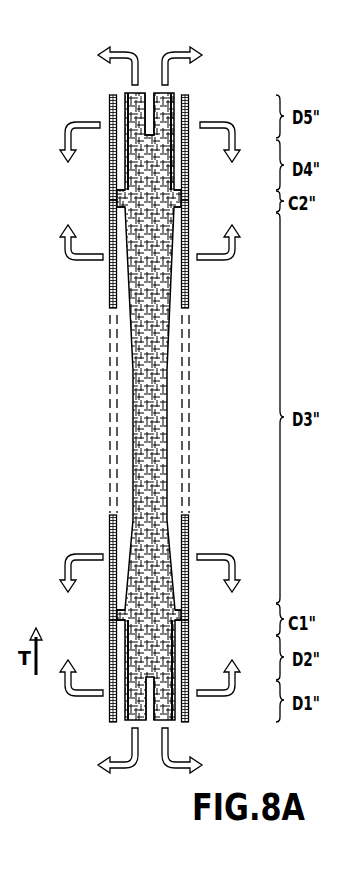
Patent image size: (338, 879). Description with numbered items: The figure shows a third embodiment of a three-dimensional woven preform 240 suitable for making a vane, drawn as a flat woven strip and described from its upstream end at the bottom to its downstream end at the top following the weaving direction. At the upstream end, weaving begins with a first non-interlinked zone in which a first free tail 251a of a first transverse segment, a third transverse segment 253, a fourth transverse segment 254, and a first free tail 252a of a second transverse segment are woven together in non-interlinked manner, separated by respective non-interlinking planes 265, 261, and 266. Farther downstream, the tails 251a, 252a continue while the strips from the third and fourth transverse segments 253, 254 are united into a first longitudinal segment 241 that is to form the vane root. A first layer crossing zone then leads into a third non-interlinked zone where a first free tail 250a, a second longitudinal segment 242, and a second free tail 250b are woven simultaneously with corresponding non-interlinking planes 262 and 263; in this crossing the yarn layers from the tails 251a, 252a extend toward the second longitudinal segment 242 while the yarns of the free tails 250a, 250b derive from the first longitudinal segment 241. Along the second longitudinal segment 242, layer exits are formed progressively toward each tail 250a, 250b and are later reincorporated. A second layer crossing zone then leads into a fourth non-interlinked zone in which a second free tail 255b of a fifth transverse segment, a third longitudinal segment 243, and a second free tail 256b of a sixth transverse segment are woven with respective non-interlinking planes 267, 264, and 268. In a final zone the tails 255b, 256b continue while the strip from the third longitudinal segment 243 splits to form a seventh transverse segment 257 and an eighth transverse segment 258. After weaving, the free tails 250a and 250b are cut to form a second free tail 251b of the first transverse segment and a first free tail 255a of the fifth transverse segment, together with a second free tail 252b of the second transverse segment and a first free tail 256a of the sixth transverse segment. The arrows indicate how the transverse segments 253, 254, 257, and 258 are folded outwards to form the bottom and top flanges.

The 3D woven preform 240 is at (182, 409).
The first longitudinal segment 241 is at (152, 650).
The second longitudinal segment 242 is at (140, 382).
The third longitudinal segment 243 is at (121, 191).
The first free tail 250a is at (186, 355).
The second free tail 250b is at (113, 355).
The first free tail of the first transverse segment 251a is at (189, 718).
The second free tail of the first transverse segment 251b is at (189, 540).
The first free tail of the second transverse segment 252a is at (110, 718).
The second free tail of the second transverse segment 252b is at (110, 540).
The third transverse segment 253 is at (167, 722).
The fourth transverse segment 254 is at (133, 722).
The first free tail of the fifth transverse segment 255a is at (189, 288).
The second free tail of the fifth transverse segment 255b is at (189, 102).
The first free tail of the sixth transverse segment 256a is at (110, 283).
The second free tail of the sixth transverse segment 256b is at (110, 102).
The seventh transverse segment 257 is at (165, 93).
The eighth transverse segment 258 is at (134, 93).
The non-interlinking plane 261 is at (151, 722).
The non-interlinking plane 262 is at (181, 425).
The non-interlinking plane 263 is at (119, 423).
The non-interlinking plane 264 is at (149, 122).
The non-interlinking plane 265 is at (177, 652).
The non-interlinking plane 266 is at (123, 652).
The non-interlinking plane 267 is at (176, 167).
The non-interlinking plane 268 is at (124, 167).